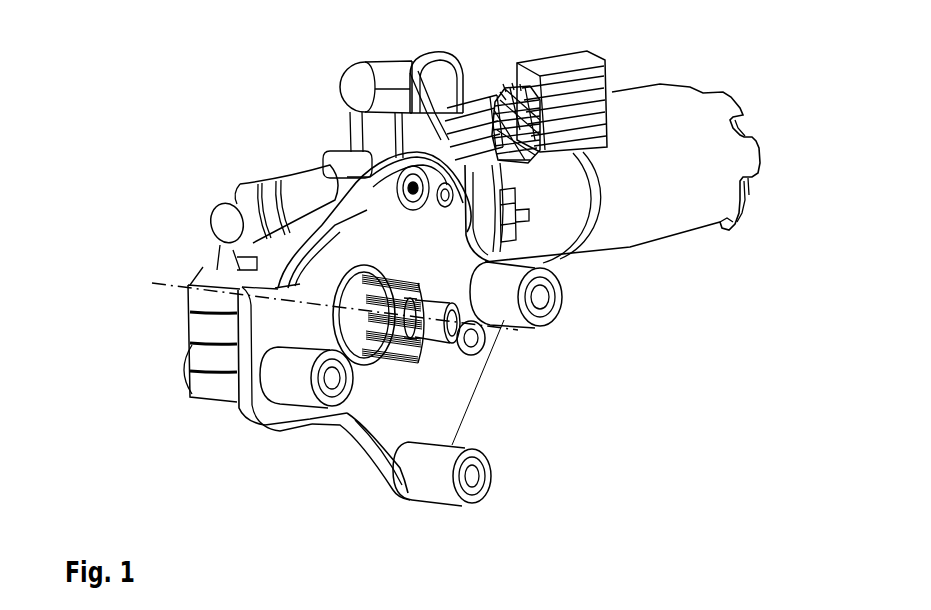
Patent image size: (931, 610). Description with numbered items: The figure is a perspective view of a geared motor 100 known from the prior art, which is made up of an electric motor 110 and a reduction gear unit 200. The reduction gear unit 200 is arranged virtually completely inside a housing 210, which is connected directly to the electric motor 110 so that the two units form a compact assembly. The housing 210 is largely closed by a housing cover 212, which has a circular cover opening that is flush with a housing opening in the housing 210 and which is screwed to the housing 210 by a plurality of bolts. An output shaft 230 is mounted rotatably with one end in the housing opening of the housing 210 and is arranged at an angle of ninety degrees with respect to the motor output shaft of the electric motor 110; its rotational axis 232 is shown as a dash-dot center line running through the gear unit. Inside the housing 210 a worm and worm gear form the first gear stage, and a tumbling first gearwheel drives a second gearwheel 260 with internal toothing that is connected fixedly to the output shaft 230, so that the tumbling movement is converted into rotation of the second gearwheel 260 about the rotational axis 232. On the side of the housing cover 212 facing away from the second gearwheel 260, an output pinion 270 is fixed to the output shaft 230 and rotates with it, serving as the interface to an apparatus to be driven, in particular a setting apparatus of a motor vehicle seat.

The geared motor 100 is at (198, 101).
The electric motor 110 is at (668, 108).
The reduction gear unit 200 is at (253, 357).
The housing 210 is at (208, 320).
The housing cover 212 is at (352, 413).
The output shaft 230 is at (457, 342).
The rotational axis 232 is at (167, 283).
The second gearwheel 260 is at (367, 278).
The output pinion 270 is at (410, 352).